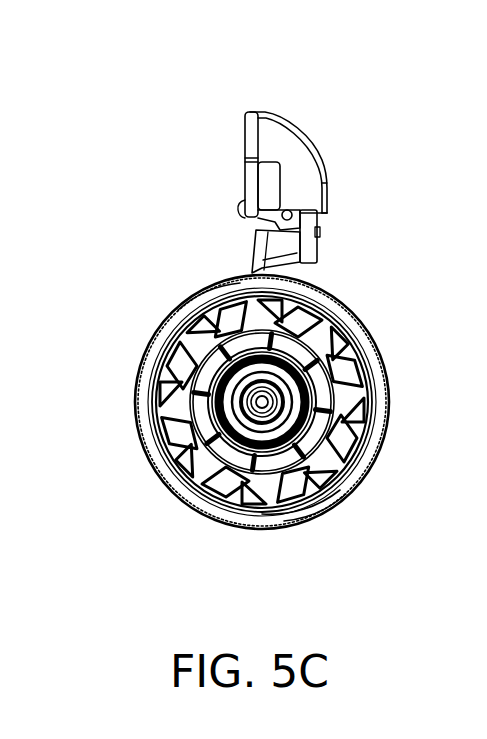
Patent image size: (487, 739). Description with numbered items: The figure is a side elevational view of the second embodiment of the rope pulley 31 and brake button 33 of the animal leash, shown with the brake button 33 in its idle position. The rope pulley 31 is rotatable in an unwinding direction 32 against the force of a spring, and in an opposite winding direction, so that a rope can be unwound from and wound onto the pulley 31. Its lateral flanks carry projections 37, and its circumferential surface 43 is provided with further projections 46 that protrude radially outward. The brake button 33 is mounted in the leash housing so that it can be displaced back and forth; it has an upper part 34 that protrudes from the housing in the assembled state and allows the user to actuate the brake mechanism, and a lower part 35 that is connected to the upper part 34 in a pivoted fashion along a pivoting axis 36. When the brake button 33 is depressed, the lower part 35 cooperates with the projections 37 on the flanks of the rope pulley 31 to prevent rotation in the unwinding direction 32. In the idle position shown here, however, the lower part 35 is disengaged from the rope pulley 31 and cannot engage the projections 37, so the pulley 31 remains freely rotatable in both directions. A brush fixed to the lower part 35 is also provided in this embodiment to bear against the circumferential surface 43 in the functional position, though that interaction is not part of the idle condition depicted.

The rope pulley 31 is at (376, 430).
The unwinding direction 32 is at (68, 378).
The brake button 33 is at (300, 133).
The upper part 34 is at (262, 112).
The lower part 35 is at (253, 247).
The pivoting axis 36 is at (280, 187).
The projections 37 is at (343, 312).
The circumferential surface 43 is at (330, 510).
The projections 46 is at (313, 517).